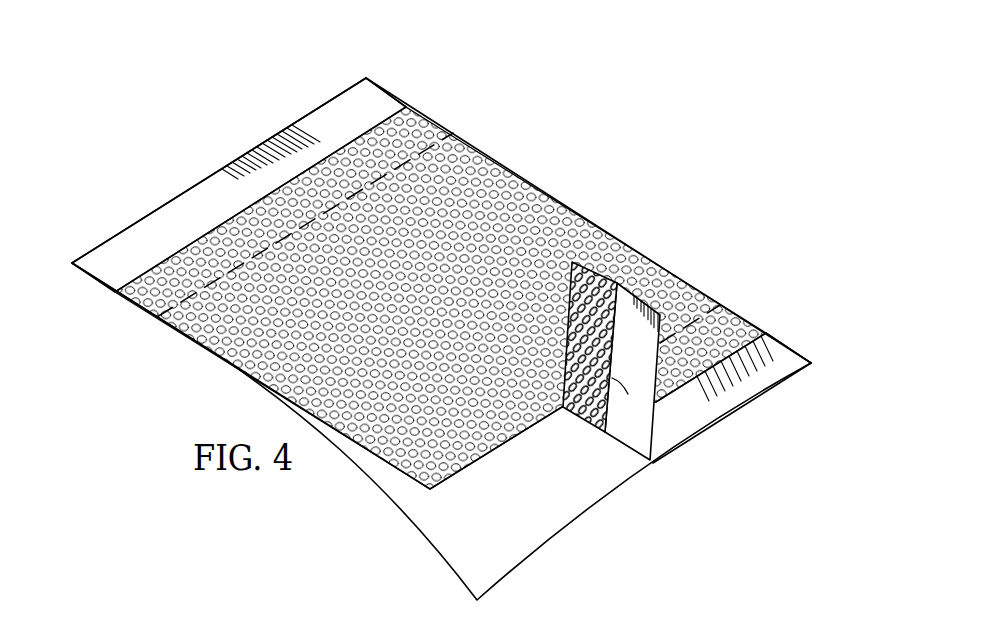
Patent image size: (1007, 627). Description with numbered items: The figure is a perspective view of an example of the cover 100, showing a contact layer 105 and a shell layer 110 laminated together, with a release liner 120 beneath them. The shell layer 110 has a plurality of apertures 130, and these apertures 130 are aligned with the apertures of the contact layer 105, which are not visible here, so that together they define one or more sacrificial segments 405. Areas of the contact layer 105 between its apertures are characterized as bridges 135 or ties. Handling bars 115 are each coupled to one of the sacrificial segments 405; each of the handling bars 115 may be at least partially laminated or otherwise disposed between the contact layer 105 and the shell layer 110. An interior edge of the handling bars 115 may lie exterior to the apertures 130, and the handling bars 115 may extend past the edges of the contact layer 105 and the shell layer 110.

The cover 100 is at (614, 108).
The contact layer 105 is at (585, 413).
The shell layer 110 is at (506, 175).
The handling bars 115 is at (163, 220).
The release liner 120 is at (552, 540).
The apertures 130 is at (362, 172).
The bridges 135 is at (580, 270).
The sacrificial segments 405 is at (421, 88).